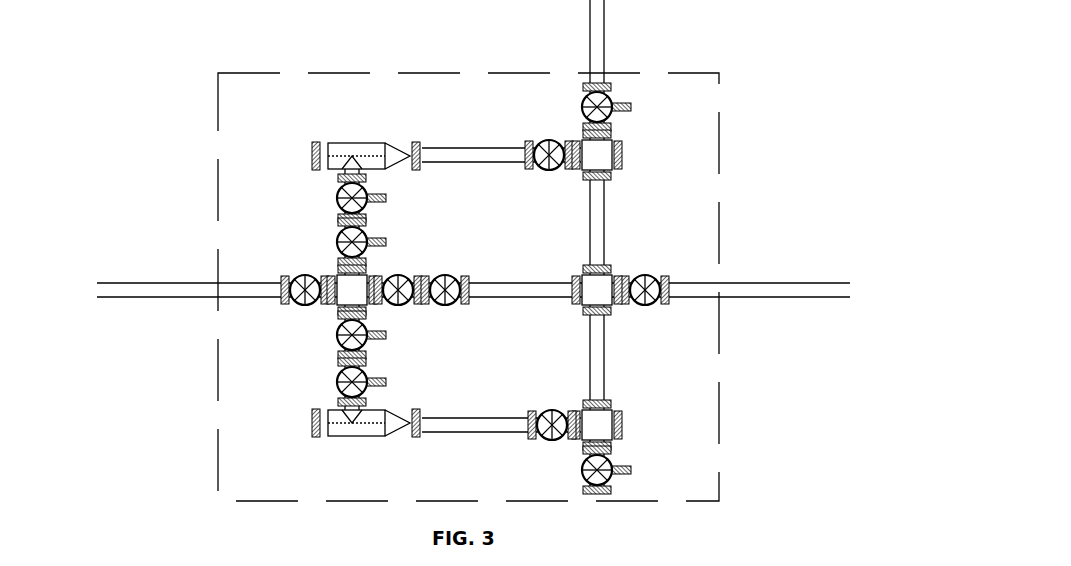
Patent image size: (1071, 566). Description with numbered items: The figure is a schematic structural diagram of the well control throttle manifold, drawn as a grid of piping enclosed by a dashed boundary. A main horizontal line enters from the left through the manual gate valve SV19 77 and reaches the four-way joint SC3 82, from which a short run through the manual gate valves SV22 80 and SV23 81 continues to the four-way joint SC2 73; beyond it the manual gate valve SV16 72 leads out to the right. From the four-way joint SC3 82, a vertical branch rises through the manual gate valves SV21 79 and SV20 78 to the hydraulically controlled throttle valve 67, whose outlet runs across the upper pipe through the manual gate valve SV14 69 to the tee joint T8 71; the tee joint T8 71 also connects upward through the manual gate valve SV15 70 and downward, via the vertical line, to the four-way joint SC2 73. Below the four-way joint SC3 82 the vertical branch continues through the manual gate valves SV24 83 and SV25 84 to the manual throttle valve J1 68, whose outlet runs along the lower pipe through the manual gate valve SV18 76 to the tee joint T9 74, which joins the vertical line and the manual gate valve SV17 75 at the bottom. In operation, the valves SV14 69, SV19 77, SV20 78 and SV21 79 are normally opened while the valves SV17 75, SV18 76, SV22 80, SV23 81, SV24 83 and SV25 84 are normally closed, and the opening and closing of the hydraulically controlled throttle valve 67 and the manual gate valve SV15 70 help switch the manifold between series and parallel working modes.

The hydraulically controlled throttle valve 67 is at (311, 148).
The manual throttle valve J1 68 is at (321, 430).
The manual gate valve SV14 69 is at (549, 138).
The manual gate valve SV15 70 is at (617, 115).
The tee joint T8 71 is at (628, 154).
The manual gate valve SV16 72 is at (640, 273).
The four-way joint SC2 73 is at (613, 313).
The tee joint T9 74 is at (627, 430).
The manual gate valve SV17 75 is at (615, 468).
The manual gate valve SV18 76 is at (533, 432).
The manual gate valve SV19 77 is at (284, 278).
The manual gate valve SV20 78 is at (337, 194).
The manual gate valve SV21 79 is at (367, 224).
The manual gate valve SV22 80 is at (395, 274).
The manual gate valve SV23 81 is at (455, 276).
The four-way joint SC3 82 is at (332, 309).
The manual gate valve SV24 83 is at (368, 338).
The manual gate valve SV25 84 is at (368, 383).